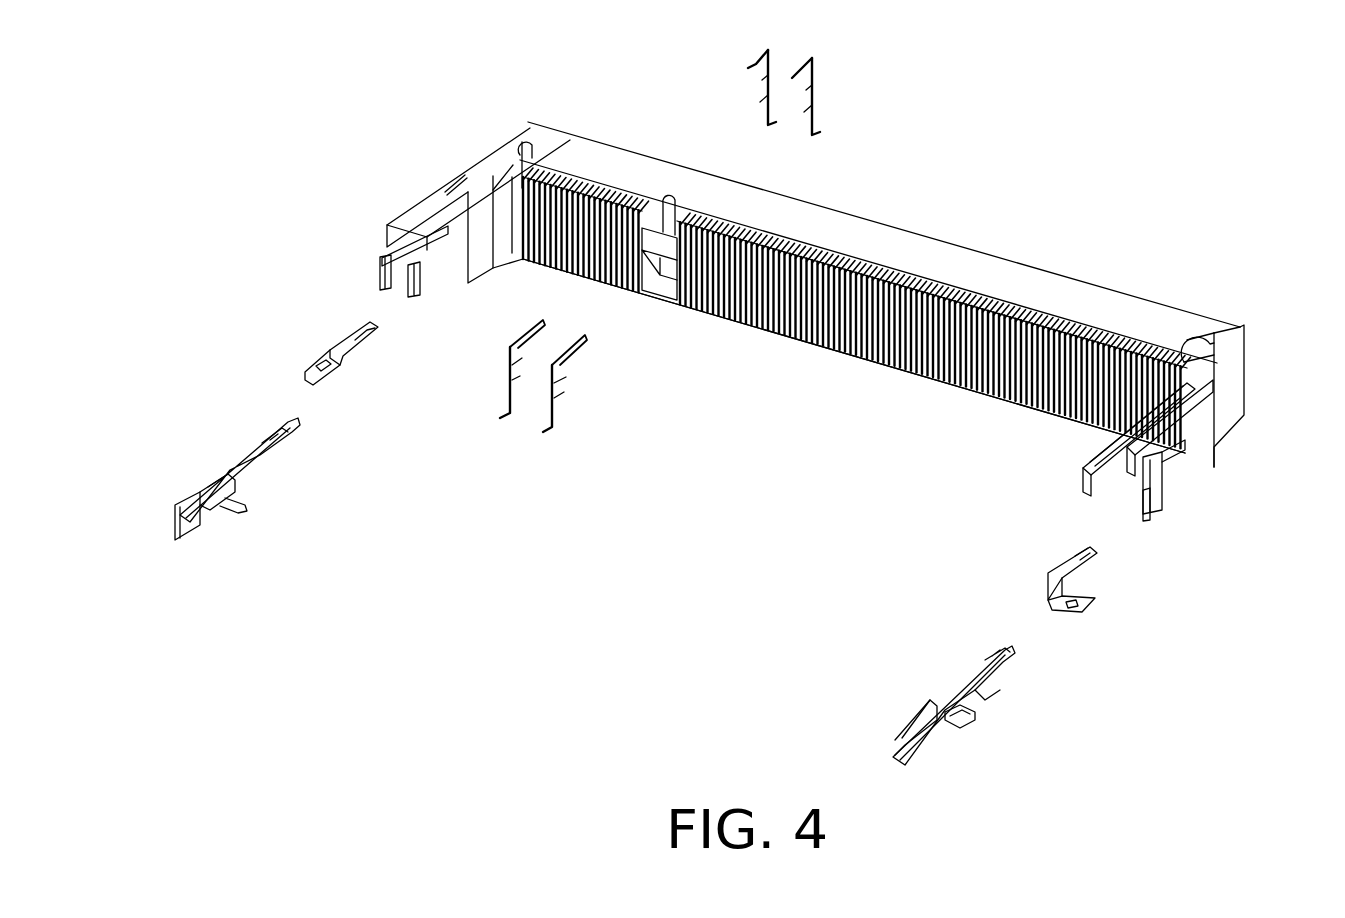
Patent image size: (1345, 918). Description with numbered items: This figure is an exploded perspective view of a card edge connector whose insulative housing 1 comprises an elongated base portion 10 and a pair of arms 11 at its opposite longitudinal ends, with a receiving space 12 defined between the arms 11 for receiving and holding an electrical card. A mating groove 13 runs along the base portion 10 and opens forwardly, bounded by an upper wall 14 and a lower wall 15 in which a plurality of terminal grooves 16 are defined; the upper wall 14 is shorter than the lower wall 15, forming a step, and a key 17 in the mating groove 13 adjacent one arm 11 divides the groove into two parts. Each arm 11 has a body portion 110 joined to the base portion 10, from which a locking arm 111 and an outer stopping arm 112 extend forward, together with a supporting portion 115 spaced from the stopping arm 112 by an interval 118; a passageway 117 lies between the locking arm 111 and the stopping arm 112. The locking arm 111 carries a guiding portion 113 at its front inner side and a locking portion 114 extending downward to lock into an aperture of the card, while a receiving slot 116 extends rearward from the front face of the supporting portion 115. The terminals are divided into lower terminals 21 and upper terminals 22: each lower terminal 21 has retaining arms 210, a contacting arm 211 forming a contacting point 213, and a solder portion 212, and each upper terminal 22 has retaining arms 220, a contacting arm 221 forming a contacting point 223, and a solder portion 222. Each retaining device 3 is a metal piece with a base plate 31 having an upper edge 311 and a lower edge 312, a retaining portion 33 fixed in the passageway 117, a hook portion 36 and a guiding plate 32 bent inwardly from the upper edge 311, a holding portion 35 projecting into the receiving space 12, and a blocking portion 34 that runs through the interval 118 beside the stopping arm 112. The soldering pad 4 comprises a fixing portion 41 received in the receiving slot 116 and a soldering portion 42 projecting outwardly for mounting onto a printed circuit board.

The insulative housing 1 is at (447, 158).
The base portion 10 is at (975, 268).
The arm 11 is at (1195, 455).
The receiving space 12 is at (822, 355).
The mating groove 13 is at (585, 182).
The upper wall 14 is at (757, 227).
The lower wall 15 is at (750, 265).
The terminal grooves 16 is at (860, 272).
The key 17 is at (669, 212).
The body portion 110 is at (1200, 370).
The locking arm 111 is at (1100, 407).
The stopping arm 112 is at (1220, 420).
The guiding portion 113 is at (420, 238).
The locking portion 114 is at (400, 265).
The supporting portion 115 is at (1170, 477).
The receiving slot 116 is at (1148, 512).
The passageway 117 is at (1095, 432).
The interval 118 is at (1165, 480).
The lower terminals 21 is at (533, 410).
The retaining arms 210 is at (580, 385).
The contacting arm 211 is at (515, 335).
The solder portion 212 is at (560, 430).
The contacting point 213 is at (500, 340).
The upper terminals 22 is at (770, 50).
The retaining arms 220 is at (815, 110).
The contacting arm 221 is at (760, 45).
The solder portion 222 is at (820, 130).
The contacting point 223 is at (745, 68).
The retaining device 3 is at (216, 447).
The base plate 31 is at (955, 695).
The upper edge 311 is at (975, 660).
The lower edge 312 is at (985, 695).
The guiding plate 32 is at (215, 518).
The retaining portion 33 is at (1010, 657).
The blocking portion 34 is at (955, 720).
The holding portion 35 is at (255, 500).
The hook portion 36 is at (200, 527).
The soldering pad 4 is at (320, 337).
The fixing portion 41 is at (1068, 575).
The soldering portion 42 is at (1095, 605).